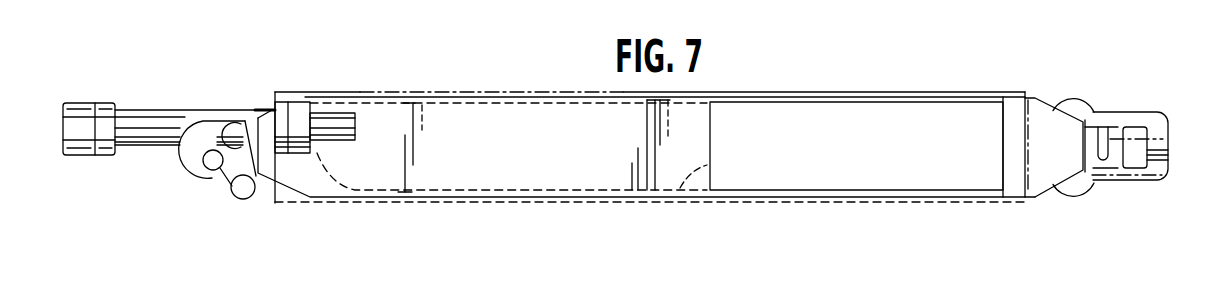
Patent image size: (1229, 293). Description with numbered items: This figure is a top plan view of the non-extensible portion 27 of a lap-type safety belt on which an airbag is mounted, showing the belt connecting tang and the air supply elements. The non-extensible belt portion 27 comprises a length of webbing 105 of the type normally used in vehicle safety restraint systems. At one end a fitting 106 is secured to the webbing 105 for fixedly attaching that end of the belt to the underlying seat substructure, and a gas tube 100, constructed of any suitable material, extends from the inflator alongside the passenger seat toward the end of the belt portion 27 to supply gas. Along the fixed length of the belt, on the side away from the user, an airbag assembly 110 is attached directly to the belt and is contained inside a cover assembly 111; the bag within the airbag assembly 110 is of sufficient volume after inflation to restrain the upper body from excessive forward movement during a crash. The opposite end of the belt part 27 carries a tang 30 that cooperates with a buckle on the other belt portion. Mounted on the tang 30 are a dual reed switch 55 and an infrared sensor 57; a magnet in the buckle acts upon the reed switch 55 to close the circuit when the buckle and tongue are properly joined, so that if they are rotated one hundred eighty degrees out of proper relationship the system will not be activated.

The non-extensible belt portion 27 is at (718, 93).
The tang 30 is at (1154, 182).
The dual reed switch 55 is at (1103, 140).
The infrared sensor 57 is at (557, 177).
The gas tube 100 is at (195, 112).
The webbing 105 is at (697, 190).
The fitting 106 is at (191, 175).
The airbag assembly 110 is at (940, 115).
The cover assembly 111 is at (1010, 110).